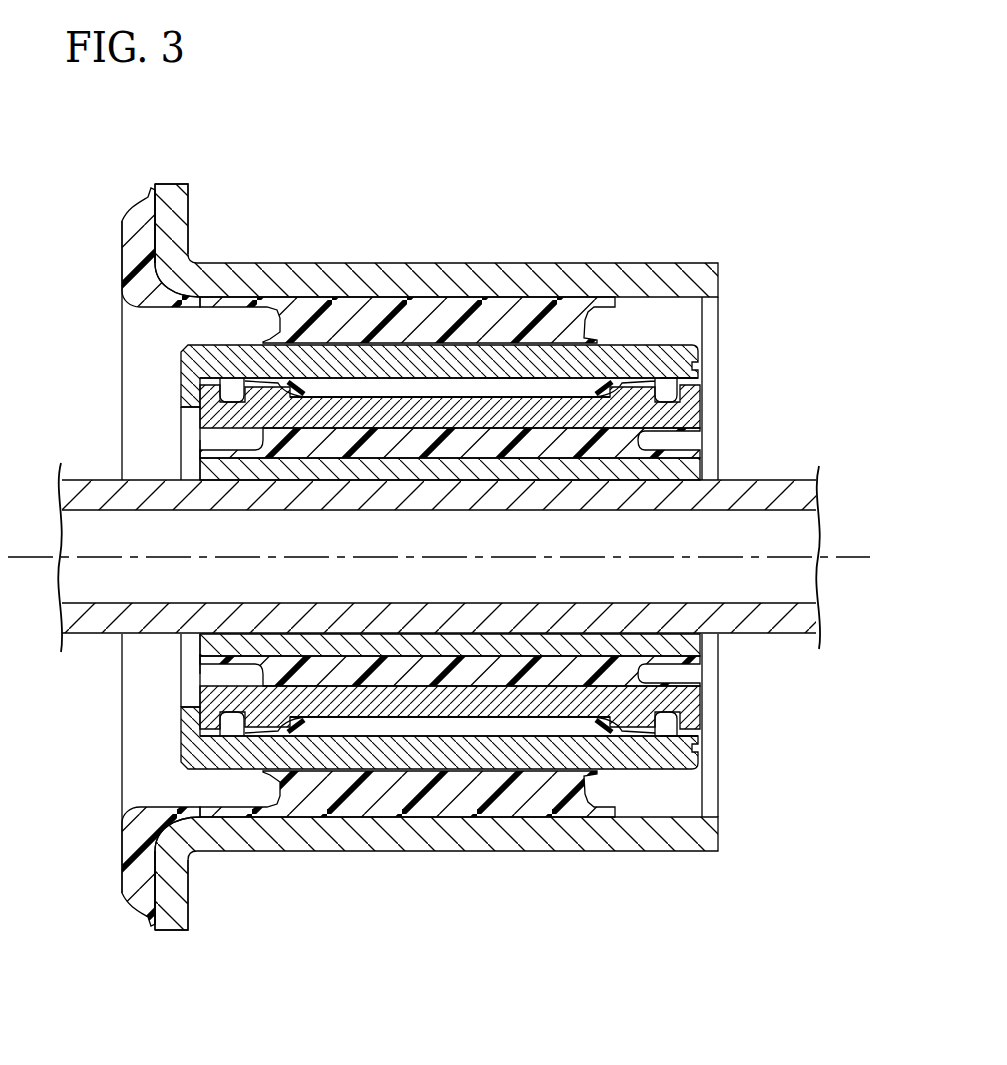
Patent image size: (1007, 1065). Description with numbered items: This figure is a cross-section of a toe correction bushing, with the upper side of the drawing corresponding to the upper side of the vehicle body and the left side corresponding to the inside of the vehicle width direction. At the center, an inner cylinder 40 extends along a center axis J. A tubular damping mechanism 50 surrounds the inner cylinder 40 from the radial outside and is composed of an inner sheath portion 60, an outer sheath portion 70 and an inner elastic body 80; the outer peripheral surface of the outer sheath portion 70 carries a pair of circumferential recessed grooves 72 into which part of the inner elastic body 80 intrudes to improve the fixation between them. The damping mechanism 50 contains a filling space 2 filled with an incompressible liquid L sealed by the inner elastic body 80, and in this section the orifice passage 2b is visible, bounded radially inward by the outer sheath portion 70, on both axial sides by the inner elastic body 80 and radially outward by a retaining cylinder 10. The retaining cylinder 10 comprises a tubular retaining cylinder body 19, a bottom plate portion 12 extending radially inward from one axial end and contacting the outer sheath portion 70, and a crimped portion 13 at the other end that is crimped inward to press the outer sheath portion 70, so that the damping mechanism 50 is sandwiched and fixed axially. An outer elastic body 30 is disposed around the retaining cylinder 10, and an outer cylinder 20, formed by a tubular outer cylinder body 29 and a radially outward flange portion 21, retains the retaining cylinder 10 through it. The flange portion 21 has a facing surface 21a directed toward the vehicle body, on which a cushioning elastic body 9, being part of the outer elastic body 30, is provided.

The filling space 2 is at (375, 378).
The orifice passage 2b is at (440, 387).
The cushioning elastic body 9 is at (133, 252).
The retaining cylinder 10 is at (447, 550).
The bottom plate portion 12 is at (447, 484).
The crimped portion 13 is at (700, 379).
The retaining cylinder body 19 is at (635, 360).
The outer cylinder 20 is at (398, 531).
The flange portion 21 is at (151, 539).
The facing surface 21a is at (155, 233).
The outer cylinder body 29 is at (685, 273).
The outer elastic body 30 is at (567, 293).
The inner cylinder 40 is at (757, 626).
The damping mechanism 50 is at (702, 410).
The inner sheath portion 60 is at (702, 467).
The outer sheath portion 70 is at (198, 415).
The recessed groove 72 is at (220, 372).
The inner elastic body 80 is at (198, 452).
The center axis J is at (858, 553).
The liquid L is at (514, 387).